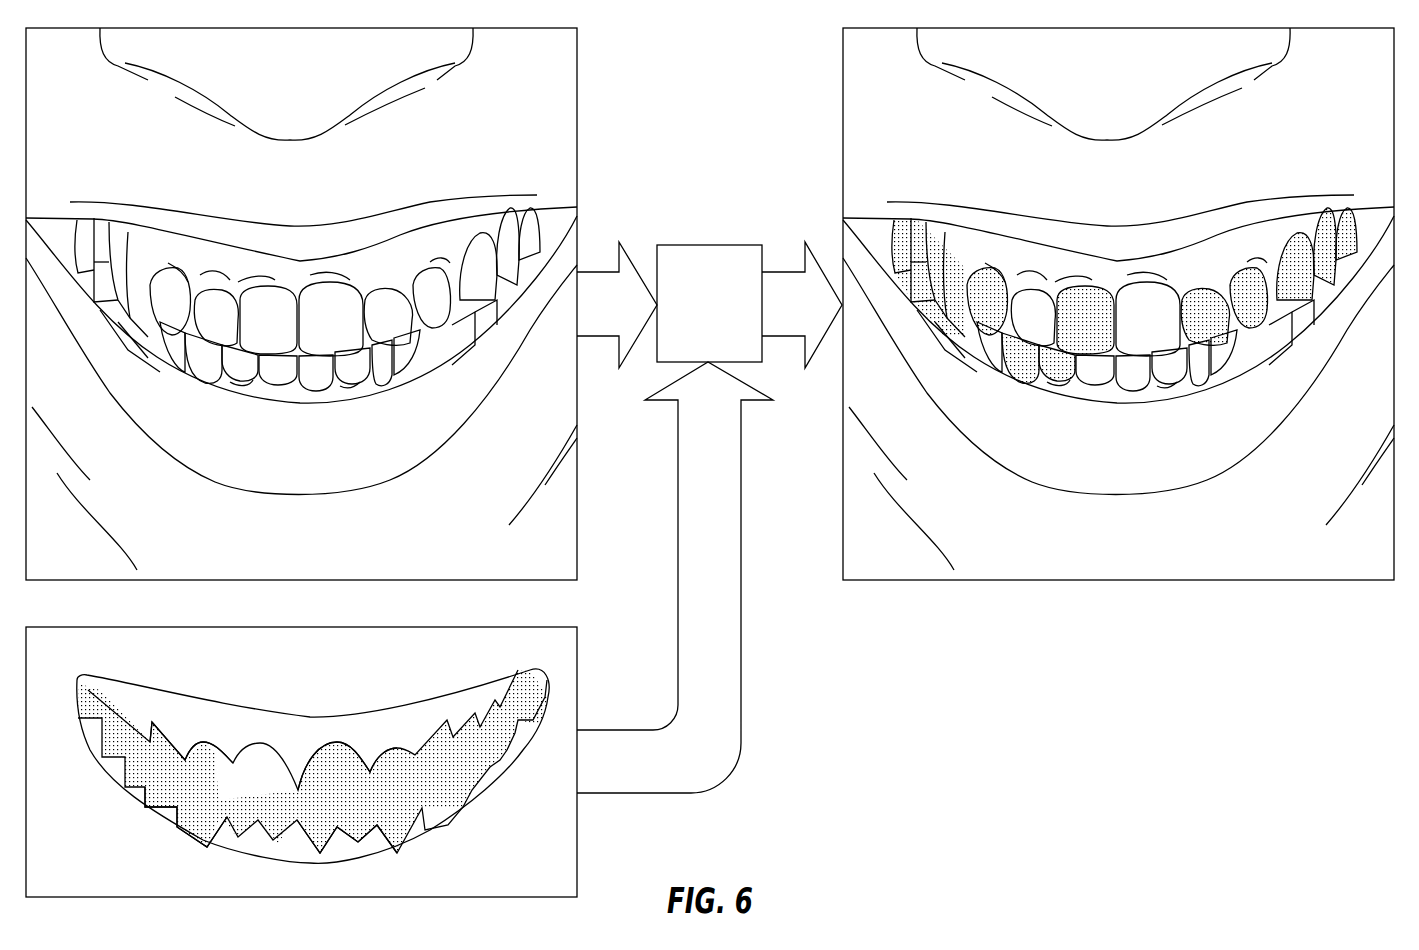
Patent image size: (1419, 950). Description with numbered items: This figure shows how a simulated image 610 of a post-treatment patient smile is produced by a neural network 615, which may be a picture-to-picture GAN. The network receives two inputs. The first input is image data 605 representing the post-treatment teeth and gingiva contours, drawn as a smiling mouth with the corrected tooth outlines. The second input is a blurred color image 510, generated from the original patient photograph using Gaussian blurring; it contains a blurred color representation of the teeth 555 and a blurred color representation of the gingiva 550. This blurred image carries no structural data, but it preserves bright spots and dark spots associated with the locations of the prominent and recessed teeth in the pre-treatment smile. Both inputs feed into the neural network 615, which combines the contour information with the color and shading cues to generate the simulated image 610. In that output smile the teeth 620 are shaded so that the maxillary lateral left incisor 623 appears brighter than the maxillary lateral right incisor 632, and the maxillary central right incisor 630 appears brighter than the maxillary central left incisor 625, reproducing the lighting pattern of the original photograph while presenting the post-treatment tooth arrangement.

The image data 605 is at (578, 137).
The simulated image 610 is at (1071, 304).
The neural network 615 is at (692, 333).
The blurred color image 510 is at (301, 745).
The blurred color representation of the gingiva 550 is at (197, 735).
The blurred color representation of the teeth 555 is at (355, 795).
The teeth 620 is at (1257, 270).
The maxillary lateral left incisor 623 is at (1015, 296).
The maxillary central left incisor 625 is at (1080, 300).
The maxillary central right incisor 630 is at (1147, 300).
The maxillary lateral right incisor 632 is at (1207, 300).